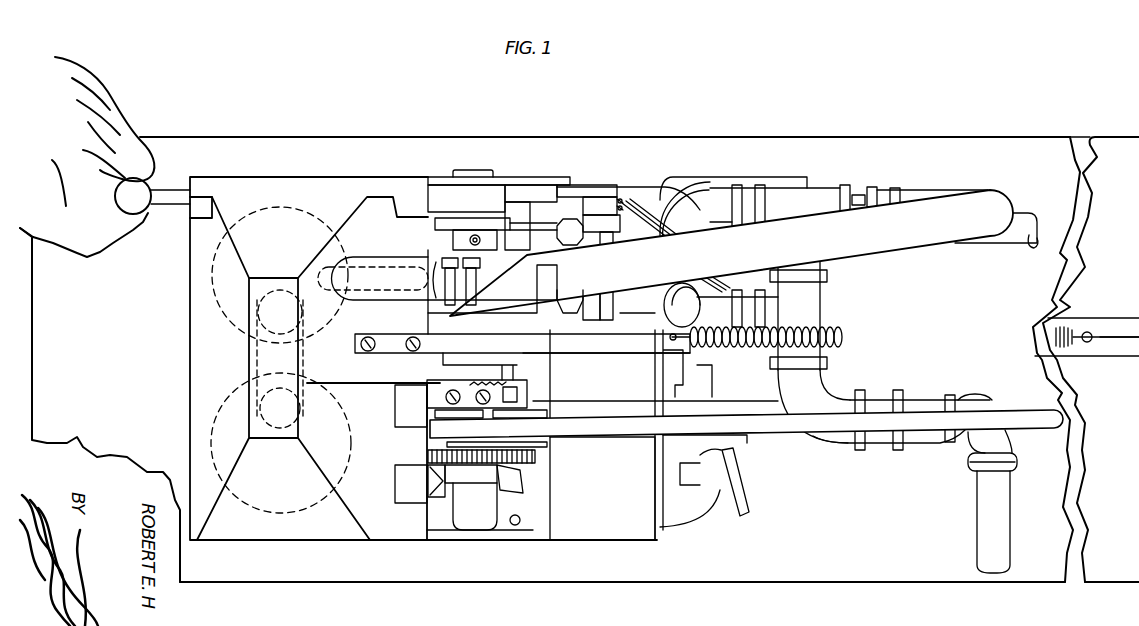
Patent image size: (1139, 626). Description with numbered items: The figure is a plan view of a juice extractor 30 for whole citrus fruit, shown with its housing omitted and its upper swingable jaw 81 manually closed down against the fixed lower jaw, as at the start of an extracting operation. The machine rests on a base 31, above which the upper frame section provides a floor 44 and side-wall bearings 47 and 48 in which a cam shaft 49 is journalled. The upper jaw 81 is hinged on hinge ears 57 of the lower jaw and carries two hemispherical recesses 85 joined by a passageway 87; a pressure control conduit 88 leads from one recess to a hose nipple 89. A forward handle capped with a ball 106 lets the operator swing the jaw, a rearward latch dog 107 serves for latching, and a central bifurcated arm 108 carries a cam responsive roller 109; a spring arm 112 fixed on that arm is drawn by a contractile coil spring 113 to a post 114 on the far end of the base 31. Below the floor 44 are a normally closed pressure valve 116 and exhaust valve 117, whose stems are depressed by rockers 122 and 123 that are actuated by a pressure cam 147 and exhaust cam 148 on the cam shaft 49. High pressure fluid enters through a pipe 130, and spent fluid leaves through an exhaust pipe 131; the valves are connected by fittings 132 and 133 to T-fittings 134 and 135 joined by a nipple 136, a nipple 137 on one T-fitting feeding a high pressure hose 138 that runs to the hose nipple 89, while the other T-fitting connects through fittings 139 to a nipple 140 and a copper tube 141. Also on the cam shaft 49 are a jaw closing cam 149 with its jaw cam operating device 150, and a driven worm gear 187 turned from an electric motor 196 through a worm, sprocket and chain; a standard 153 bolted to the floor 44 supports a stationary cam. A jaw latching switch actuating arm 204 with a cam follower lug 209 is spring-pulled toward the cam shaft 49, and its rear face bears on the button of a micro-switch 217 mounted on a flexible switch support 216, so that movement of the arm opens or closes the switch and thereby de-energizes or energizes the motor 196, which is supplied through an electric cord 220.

The juice extractor 30 is at (905, 90).
The base 31 is at (998, 143).
The floor 44 is at (518, 327).
The bearing 47 is at (460, 527).
The bearing 48 is at (483, 174).
The cam shaft 49 is at (479, 251).
The hinge ears 57 is at (407, 472).
The upper swingable jaw 81 is at (312, 193).
The hemispherical recesses 85 is at (228, 318).
The passageway 87 is at (260, 370).
The pressure control conduit 88 is at (346, 300).
The hose nipple 89 is at (414, 292).
The ball 106 is at (156, 222).
The latch dog 107 is at (458, 197).
The bifurcated arm 108 is at (382, 432).
The cam responsive roller 109 is at (476, 355).
The spring arm 112 is at (597, 342).
The contractile coil spring 113 is at (848, 337).
The post 114 is at (1119, 371).
The pressure valve 116 is at (608, 235).
The exhaust valve 117 is at (604, 308).
The rocker 122 is at (534, 240).
The rocker 123 is at (562, 292).
The pipe 130 is at (990, 244).
The exhaust pipe 131 is at (987, 507).
The fitting 132 is at (703, 205).
The fitting 133 is at (730, 288).
The T-fitting 134 is at (824, 197).
The T-fitting 135 is at (821, 306).
The nipple 136 is at (826, 268).
The nipple 137 is at (868, 198).
The high pressure hose 138 is at (960, 203).
The fittings 139 is at (840, 398).
The nipple 140 is at (920, 397).
The copper tube 141 is at (1016, 415).
The pressure cam 147 is at (437, 223).
The exhaust cam 148 is at (472, 306).
The jaw closing cam 149 is at (524, 352).
The jaw cam operating device 150 is at (538, 395).
The standard 153 is at (530, 444).
The driven worm gear 187 is at (520, 459).
The electric motor 196 is at (608, 523).
The jaw latching switch actuating arm 204 is at (575, 197).
The cam follower lug 209 is at (568, 180).
The flexible switch support 216 is at (645, 188).
The micro-switch 217 is at (606, 197).
The electric cord 220 is at (742, 498).